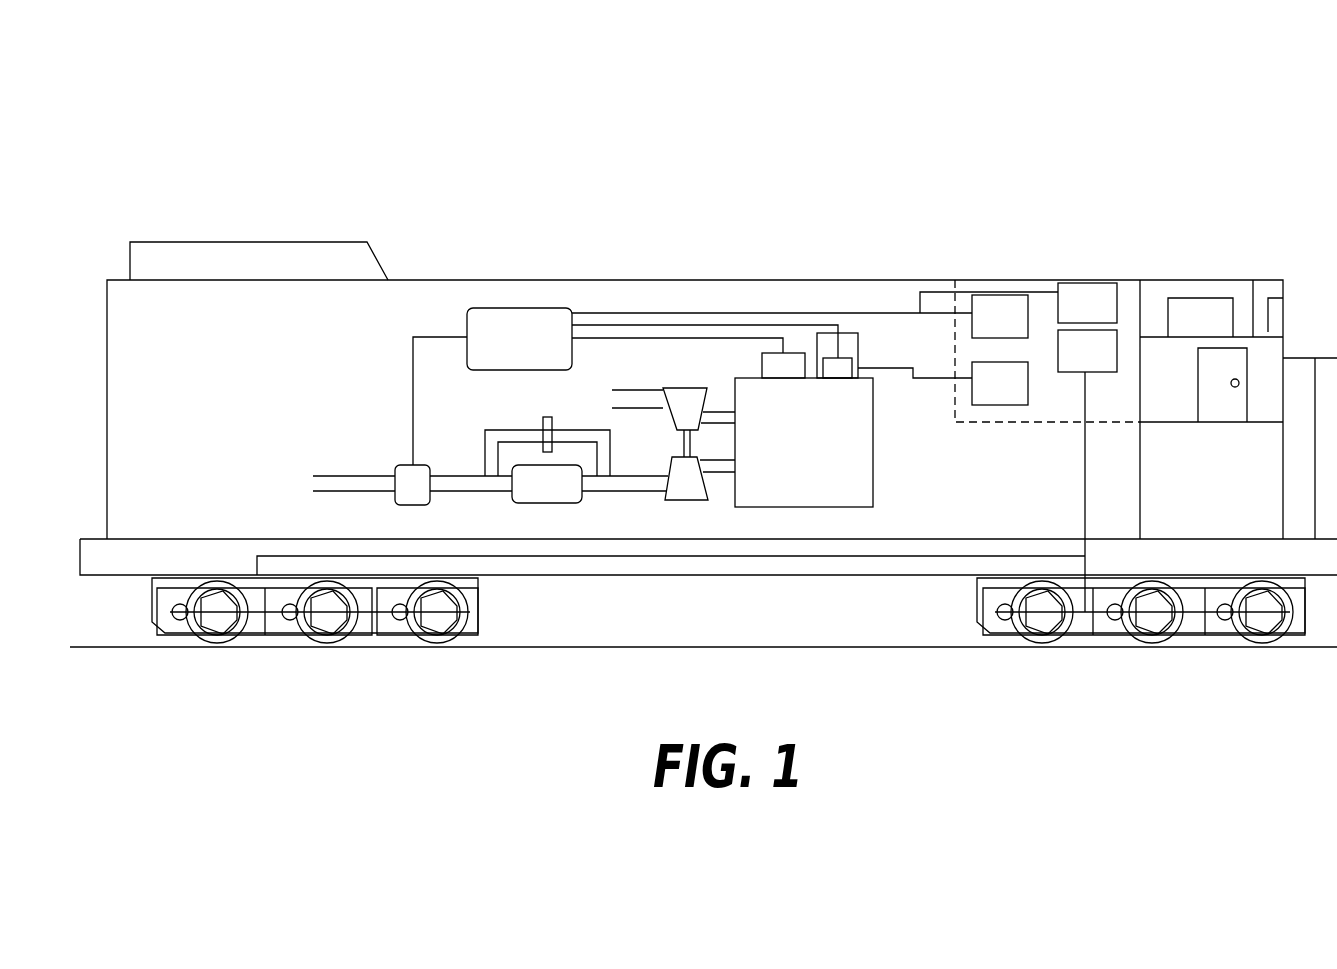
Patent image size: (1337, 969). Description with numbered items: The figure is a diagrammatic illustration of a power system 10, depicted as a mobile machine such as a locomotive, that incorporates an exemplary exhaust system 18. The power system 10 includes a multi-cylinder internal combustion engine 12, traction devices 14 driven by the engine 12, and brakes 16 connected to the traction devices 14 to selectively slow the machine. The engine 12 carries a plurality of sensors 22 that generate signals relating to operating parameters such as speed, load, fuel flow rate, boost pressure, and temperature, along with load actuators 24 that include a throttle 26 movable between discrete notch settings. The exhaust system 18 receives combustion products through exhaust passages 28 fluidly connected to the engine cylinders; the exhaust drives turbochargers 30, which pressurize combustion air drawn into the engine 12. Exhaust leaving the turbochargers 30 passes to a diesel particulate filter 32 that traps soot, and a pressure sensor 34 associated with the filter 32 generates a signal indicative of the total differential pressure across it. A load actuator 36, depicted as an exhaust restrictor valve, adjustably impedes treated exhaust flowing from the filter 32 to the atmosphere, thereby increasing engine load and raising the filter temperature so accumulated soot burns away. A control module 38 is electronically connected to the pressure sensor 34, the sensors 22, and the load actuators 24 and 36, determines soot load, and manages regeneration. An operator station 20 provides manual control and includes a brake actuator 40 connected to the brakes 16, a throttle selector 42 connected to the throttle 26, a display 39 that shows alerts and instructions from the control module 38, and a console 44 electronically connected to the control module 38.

The power system 10 is at (1008, 116).
The internal combustion engine 12 is at (804, 442).
The traction devices 14 is at (504, 607).
The brakes 16 is at (396, 637).
The exhaust system 18 is at (362, 353).
The operator station 20 is at (1012, 423).
The sensors 22 is at (752, 360).
The load actuators 24 is at (858, 348).
The throttle 26 is at (845, 373).
The exhaust passages 28 is at (712, 480).
The turbochargers 30 is at (670, 457).
The diesel particulate filter 32 is at (549, 484).
The pressure sensor 34 is at (545, 417).
The load actuator 36 is at (407, 465).
The control module 38 is at (735, 378).
The display 39 is at (1087, 303).
The brake actuator 40 is at (1087, 471).
The throttle selector 42 is at (943, 383).
The console 44 is at (1000, 316).